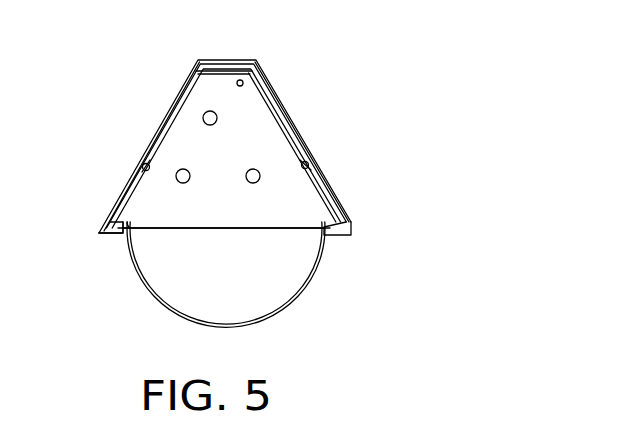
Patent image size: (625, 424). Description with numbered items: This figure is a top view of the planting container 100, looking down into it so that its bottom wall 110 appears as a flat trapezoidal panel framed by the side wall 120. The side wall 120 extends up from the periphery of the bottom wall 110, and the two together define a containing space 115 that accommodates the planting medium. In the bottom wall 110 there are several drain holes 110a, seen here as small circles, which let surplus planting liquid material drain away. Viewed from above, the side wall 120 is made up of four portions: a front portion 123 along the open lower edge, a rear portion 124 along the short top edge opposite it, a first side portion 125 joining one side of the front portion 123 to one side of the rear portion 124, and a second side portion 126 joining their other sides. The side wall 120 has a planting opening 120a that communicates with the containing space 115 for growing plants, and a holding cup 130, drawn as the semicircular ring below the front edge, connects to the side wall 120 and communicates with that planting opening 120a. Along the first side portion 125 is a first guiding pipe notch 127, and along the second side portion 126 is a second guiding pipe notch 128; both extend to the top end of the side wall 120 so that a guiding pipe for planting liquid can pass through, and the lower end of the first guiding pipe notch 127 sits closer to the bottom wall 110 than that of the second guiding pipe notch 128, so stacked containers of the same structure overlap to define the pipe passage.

The planting container 100 is at (424, 108).
The bottom wall 110 is at (260, 137).
The drain hole 110a is at (210, 111).
The containing space 115 is at (277, 217).
The side wall 120 is at (346, 203).
The planting opening 120a is at (153, 232).
The front portion 123 is at (123, 234).
The rear portion 124 is at (216, 68).
The first side portion 125 is at (168, 112).
The second side portion 126 is at (294, 153).
The first guiding pipe notch 127 is at (134, 177).
The second guiding pipe notch 128 is at (318, 181).
The holding cup 130 is at (174, 311).